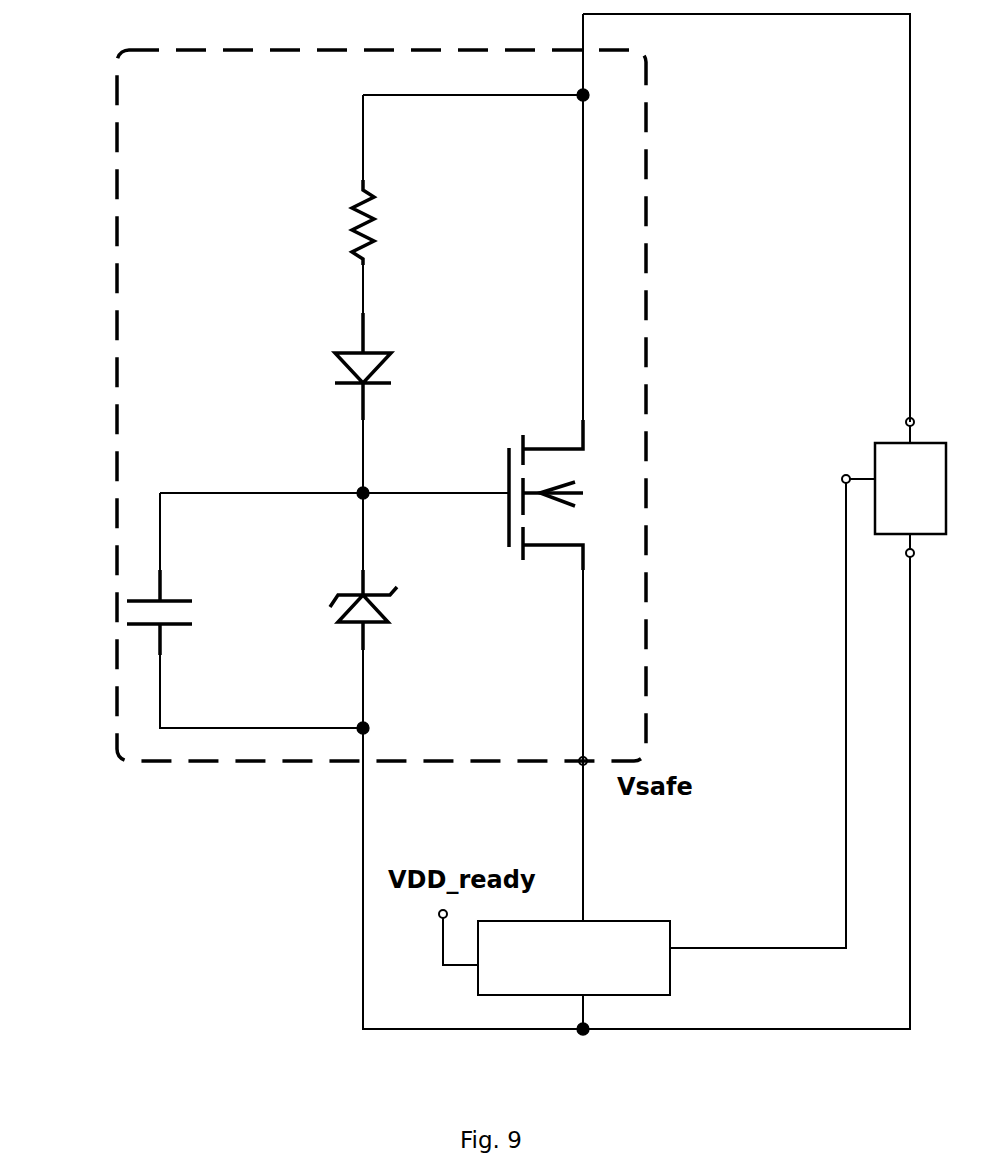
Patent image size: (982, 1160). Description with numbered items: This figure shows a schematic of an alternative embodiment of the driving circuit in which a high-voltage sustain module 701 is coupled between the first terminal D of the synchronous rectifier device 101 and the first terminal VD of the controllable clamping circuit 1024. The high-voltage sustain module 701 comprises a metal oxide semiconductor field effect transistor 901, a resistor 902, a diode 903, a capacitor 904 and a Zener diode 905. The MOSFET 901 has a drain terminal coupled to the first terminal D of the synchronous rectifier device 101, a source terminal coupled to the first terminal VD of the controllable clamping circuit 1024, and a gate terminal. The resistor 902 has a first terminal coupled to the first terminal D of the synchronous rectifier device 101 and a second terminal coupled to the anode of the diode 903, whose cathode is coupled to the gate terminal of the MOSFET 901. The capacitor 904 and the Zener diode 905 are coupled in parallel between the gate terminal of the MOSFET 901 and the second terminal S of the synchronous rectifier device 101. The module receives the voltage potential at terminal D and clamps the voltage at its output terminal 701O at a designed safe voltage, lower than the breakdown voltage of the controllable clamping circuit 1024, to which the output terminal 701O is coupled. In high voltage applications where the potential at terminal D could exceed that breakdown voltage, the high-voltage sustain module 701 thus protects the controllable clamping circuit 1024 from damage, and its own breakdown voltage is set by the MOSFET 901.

The high-voltage sustain module 701 is at (113, 92).
The output terminal 701O is at (580, 765).
The metal oxide semiconductor field effect transistor 901 is at (540, 430).
The resistor 902 is at (347, 238).
The diode 903 is at (327, 362).
The capacitor 904 is at (197, 612).
The Zener diode 905 is at (402, 612).
The controllable clamping circuit 1024 is at (645, 921).
The synchronous rectifier device 101 is at (883, 489).